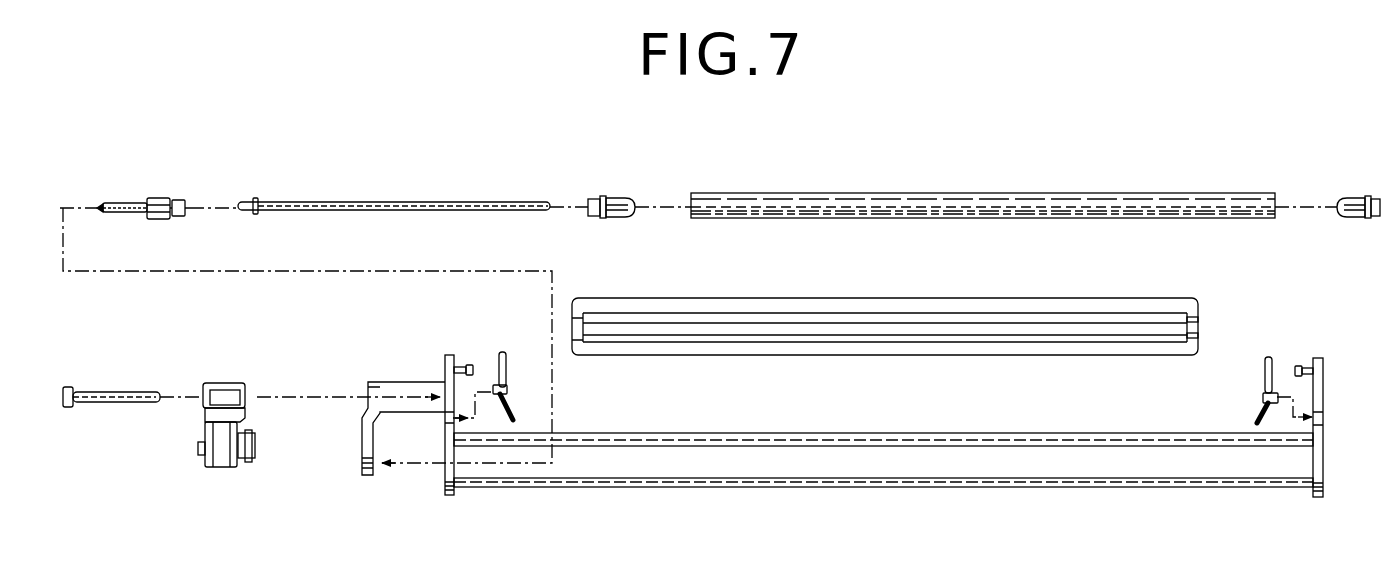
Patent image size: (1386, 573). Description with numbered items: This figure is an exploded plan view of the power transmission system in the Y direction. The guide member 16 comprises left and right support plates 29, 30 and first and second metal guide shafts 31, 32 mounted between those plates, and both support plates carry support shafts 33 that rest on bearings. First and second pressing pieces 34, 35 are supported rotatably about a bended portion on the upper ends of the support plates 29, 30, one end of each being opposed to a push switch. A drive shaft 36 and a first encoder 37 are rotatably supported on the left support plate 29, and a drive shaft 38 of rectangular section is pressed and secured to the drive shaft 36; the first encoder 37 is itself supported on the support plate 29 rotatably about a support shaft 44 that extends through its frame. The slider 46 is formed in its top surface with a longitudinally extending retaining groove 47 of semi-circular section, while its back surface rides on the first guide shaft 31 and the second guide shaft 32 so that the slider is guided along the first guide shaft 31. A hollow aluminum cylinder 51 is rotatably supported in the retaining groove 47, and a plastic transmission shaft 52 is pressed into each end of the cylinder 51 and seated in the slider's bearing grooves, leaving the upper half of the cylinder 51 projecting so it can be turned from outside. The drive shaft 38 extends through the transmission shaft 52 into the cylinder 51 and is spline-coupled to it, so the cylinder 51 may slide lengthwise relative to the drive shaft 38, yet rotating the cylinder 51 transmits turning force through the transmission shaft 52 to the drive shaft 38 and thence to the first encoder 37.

The guide member 16 is at (883, 525).
The left support plate 29 is at (443, 482).
The right support plate 30 is at (1327, 468).
The first guide shaft 31 is at (950, 434).
The second guide shaft 32 is at (997, 488).
The support shaft 33 is at (463, 365).
The first pressing piece 34 is at (504, 354).
The second pressing piece 35 is at (1262, 357).
The drive shaft 36 is at (132, 205).
The first encoder 37 is at (195, 430).
The drive shaft 38 is at (436, 202).
The support shaft 44 is at (125, 392).
The slider 46 is at (1087, 300).
The retaining groove 47 is at (765, 317).
The cylinder 51 is at (983, 200).
The transmission shaft 52 is at (616, 197).